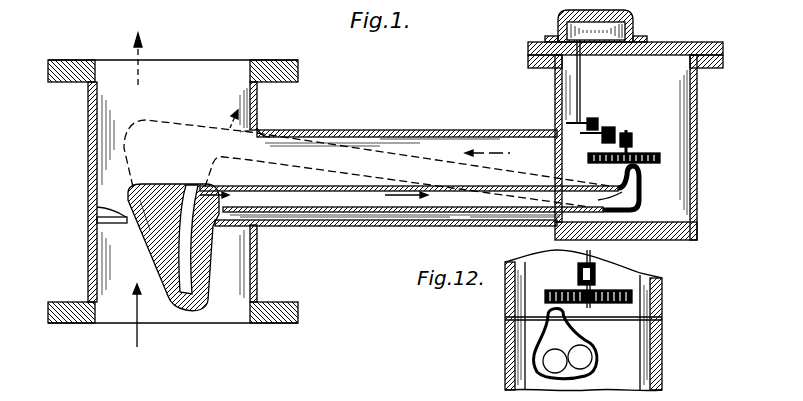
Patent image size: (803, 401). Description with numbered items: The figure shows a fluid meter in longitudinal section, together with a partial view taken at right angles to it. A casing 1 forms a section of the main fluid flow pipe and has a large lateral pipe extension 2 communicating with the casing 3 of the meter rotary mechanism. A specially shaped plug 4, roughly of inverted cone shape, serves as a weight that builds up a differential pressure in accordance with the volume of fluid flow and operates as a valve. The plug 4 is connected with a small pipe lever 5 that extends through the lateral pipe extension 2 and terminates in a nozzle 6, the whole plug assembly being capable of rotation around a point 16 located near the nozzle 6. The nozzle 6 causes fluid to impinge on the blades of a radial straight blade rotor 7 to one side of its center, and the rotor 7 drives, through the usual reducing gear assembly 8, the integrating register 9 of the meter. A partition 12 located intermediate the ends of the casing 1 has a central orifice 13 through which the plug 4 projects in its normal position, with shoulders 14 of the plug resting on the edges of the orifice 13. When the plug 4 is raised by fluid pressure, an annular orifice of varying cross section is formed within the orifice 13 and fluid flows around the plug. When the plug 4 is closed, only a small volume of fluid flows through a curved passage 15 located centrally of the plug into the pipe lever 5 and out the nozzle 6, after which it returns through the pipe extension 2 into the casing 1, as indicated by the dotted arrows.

In FIG. 1, the casing 1 is at (68, 78).
In FIG. 1, the lateral pipe extension 2 is at (410, 130).
In FIG. 12, the meter rotary mechanism casing 3 is at (496, 361).
In FIG. 1, the plug 4 is at (197, 306).
In FIG. 1, the pipe lever 5 is at (335, 138).
In FIG. 12, the pipe lever 5 is at (597, 367).
In FIG. 1, the nozzle 6 is at (638, 178).
In FIG. 12, the nozzle 6 is at (548, 328).
In FIG. 1, the rotor 7 is at (590, 158).
In FIG. 12, the rotor 7 is at (617, 292).
In FIG. 1, the reducing gear assembly 8 is at (632, 114).
In FIG. 12, the reducing gear assembly 8 is at (562, 277).
In FIG. 1, the register 9 is at (536, 24).
In FIG. 1, the partition 12 is at (88, 211).
In FIG. 1, the central orifice 13 is at (134, 224).
In FIG. 1, the shoulders 14 is at (214, 158).
In FIG. 1, the curved passage 15 is at (188, 300).
In FIG. 1, the pivot point 16 is at (618, 170).
In FIG. 12, the pivot point 16 is at (613, 320).